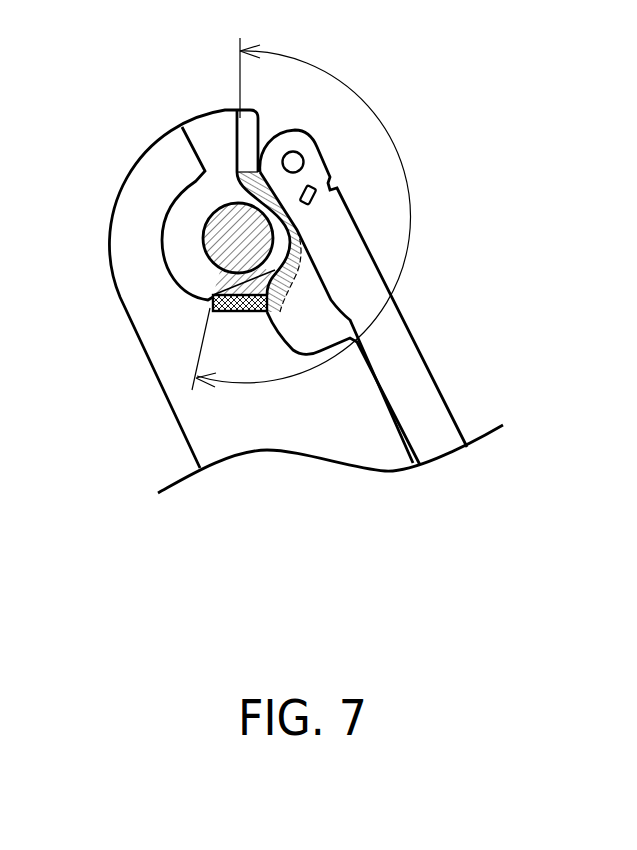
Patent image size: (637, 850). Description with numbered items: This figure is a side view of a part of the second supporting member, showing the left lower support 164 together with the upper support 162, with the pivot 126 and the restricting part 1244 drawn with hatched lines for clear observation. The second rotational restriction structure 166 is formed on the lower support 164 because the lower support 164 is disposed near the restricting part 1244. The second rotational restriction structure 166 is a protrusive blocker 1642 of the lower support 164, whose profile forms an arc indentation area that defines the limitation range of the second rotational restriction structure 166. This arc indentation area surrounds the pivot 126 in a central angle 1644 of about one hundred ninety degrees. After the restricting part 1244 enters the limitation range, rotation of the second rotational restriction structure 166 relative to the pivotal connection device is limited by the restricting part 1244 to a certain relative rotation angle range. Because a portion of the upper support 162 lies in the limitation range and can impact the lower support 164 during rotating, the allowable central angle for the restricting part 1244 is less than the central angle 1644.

The pivot 126 is at (215, 225).
The upper support 162 is at (402, 365).
The lower support 164 is at (207, 420).
The second rotational restriction structure 166 is at (278, 292).
The restricting part 1244 is at (212, 301).
The protrusive blocker 1642 is at (177, 247).
The central angle 1644 is at (331, 214).